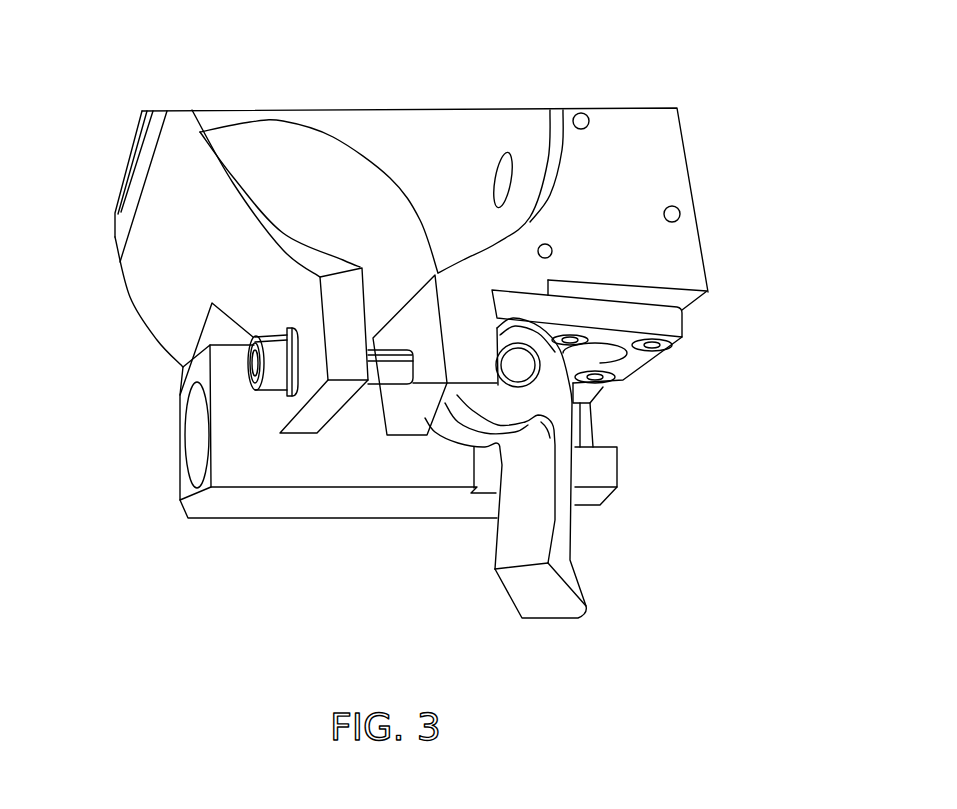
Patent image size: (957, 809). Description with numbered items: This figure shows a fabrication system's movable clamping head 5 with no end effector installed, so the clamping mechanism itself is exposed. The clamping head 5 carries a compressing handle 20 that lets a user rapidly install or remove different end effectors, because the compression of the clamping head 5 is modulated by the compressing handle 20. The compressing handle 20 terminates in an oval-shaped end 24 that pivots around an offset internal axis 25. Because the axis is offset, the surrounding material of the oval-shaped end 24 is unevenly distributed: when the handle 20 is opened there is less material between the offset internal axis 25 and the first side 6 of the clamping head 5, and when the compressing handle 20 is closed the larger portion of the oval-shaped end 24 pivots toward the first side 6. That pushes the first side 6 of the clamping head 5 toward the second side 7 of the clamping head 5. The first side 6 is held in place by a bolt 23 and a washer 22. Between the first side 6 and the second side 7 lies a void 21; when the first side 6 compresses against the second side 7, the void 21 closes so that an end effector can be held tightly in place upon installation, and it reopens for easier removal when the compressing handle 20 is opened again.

The movable clamping head 5 is at (672, 193).
The first side 6 is at (470, 295).
The second side 7 is at (337, 297).
The compressing handle 20 is at (512, 535).
The void 21 is at (387, 340).
The washer 22 is at (282, 400).
The bolt 23 is at (253, 338).
The oval-shaped end 24 is at (545, 382).
The offset internal axis 25 is at (508, 345).